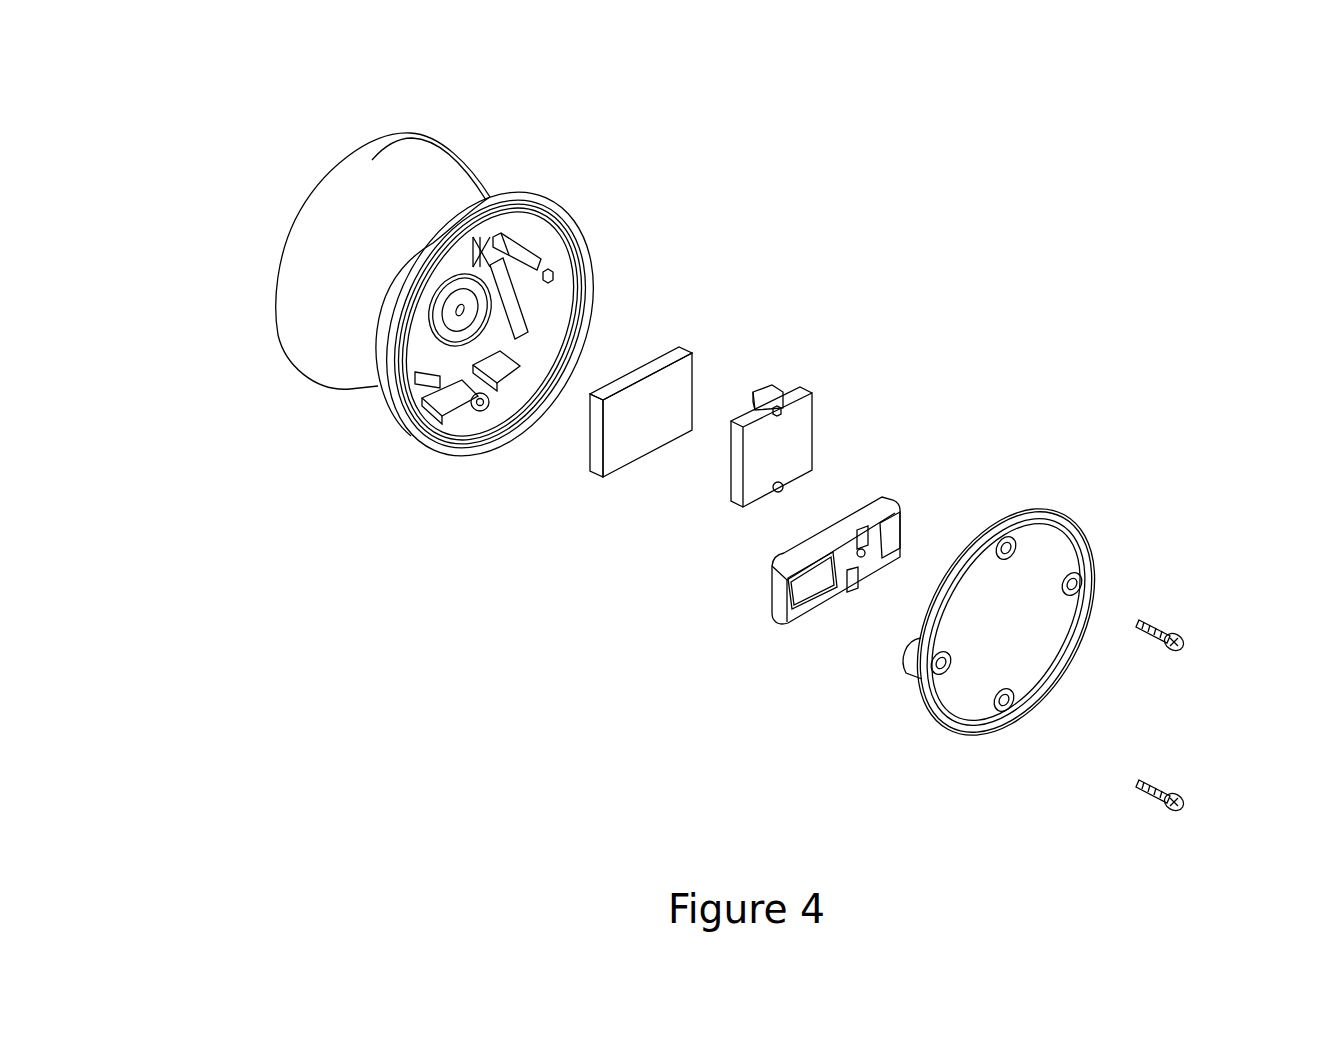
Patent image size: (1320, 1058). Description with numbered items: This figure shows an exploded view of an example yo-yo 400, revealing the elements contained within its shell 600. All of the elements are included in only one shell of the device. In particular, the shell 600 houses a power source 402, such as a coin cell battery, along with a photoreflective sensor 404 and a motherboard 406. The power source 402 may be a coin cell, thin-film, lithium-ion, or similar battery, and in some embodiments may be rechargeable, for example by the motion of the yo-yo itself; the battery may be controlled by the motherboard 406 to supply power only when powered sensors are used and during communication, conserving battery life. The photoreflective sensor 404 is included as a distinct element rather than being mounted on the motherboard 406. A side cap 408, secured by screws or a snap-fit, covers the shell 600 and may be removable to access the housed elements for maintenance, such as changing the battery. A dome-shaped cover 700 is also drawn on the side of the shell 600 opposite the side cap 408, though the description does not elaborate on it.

The yo-yo 400 is at (553, 157).
The cap 700 is at (328, 245).
The shell 600 is at (388, 360).
The power source 402 is at (620, 440).
The photoreflective sensor 404 is at (797, 440).
The motherboard 406 is at (798, 590).
The side cap 408 is at (1153, 496).